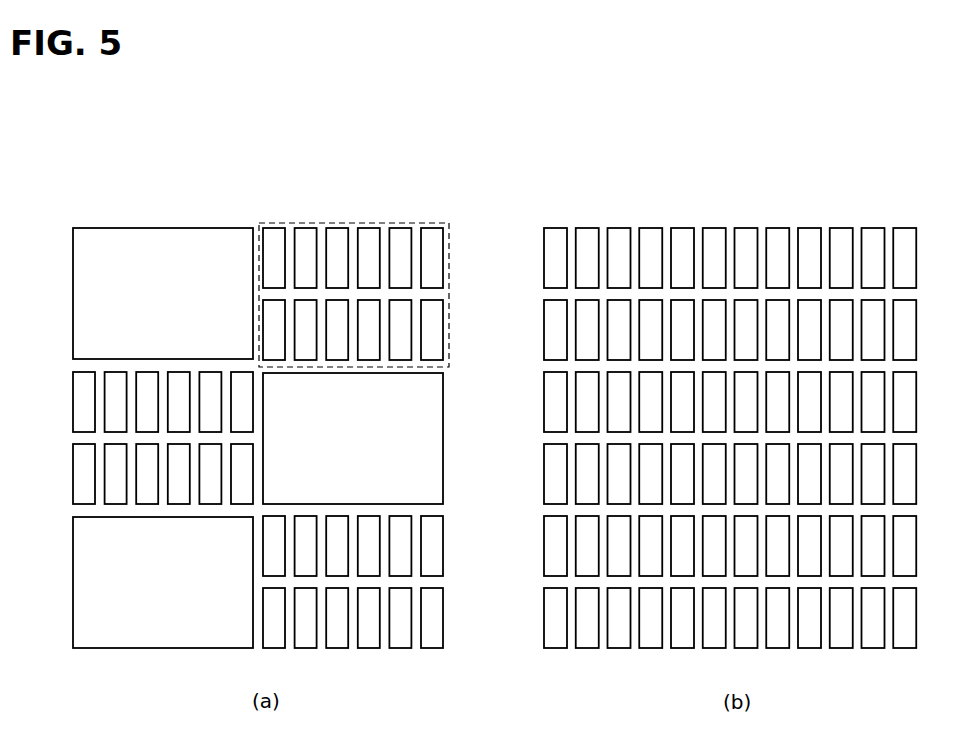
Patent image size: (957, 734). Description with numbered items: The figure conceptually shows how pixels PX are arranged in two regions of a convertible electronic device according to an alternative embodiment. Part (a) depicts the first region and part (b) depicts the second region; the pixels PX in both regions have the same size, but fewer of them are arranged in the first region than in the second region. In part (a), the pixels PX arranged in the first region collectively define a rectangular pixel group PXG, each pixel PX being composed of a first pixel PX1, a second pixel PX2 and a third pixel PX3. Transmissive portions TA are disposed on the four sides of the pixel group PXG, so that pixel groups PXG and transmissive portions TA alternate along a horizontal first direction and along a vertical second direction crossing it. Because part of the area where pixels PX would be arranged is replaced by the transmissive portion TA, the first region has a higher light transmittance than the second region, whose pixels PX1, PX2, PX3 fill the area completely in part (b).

The transmissive portion TA is at (156, 242).
The pixel PX is at (370, 157).
The first pixel PX1 is at (307, 235).
The second pixel PX2 is at (337, 235).
The third pixel PX3 is at (275, 235).
The pixel group PXG is at (450, 222).